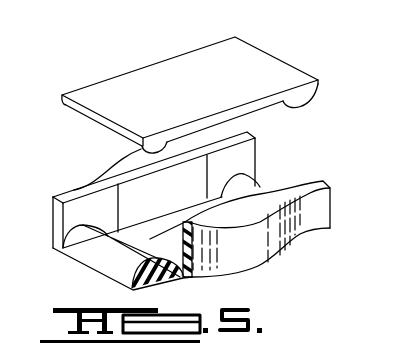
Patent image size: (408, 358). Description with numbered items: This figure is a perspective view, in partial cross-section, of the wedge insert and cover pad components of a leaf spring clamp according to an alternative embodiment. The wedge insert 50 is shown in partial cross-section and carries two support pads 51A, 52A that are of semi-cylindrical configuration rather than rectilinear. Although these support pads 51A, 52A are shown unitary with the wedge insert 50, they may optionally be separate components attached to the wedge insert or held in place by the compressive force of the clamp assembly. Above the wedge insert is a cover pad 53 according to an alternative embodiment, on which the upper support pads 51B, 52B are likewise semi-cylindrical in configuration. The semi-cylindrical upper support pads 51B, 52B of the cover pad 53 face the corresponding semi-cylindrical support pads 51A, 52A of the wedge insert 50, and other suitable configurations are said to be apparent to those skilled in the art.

The wedge insert 50 is at (285, 133).
The support pad 51A is at (118, 250).
The upper support pad 51B is at (100, 123).
The support pad 52A is at (256, 187).
The upper support pad 52B is at (318, 95).
The cover pad 53 is at (289, 46).